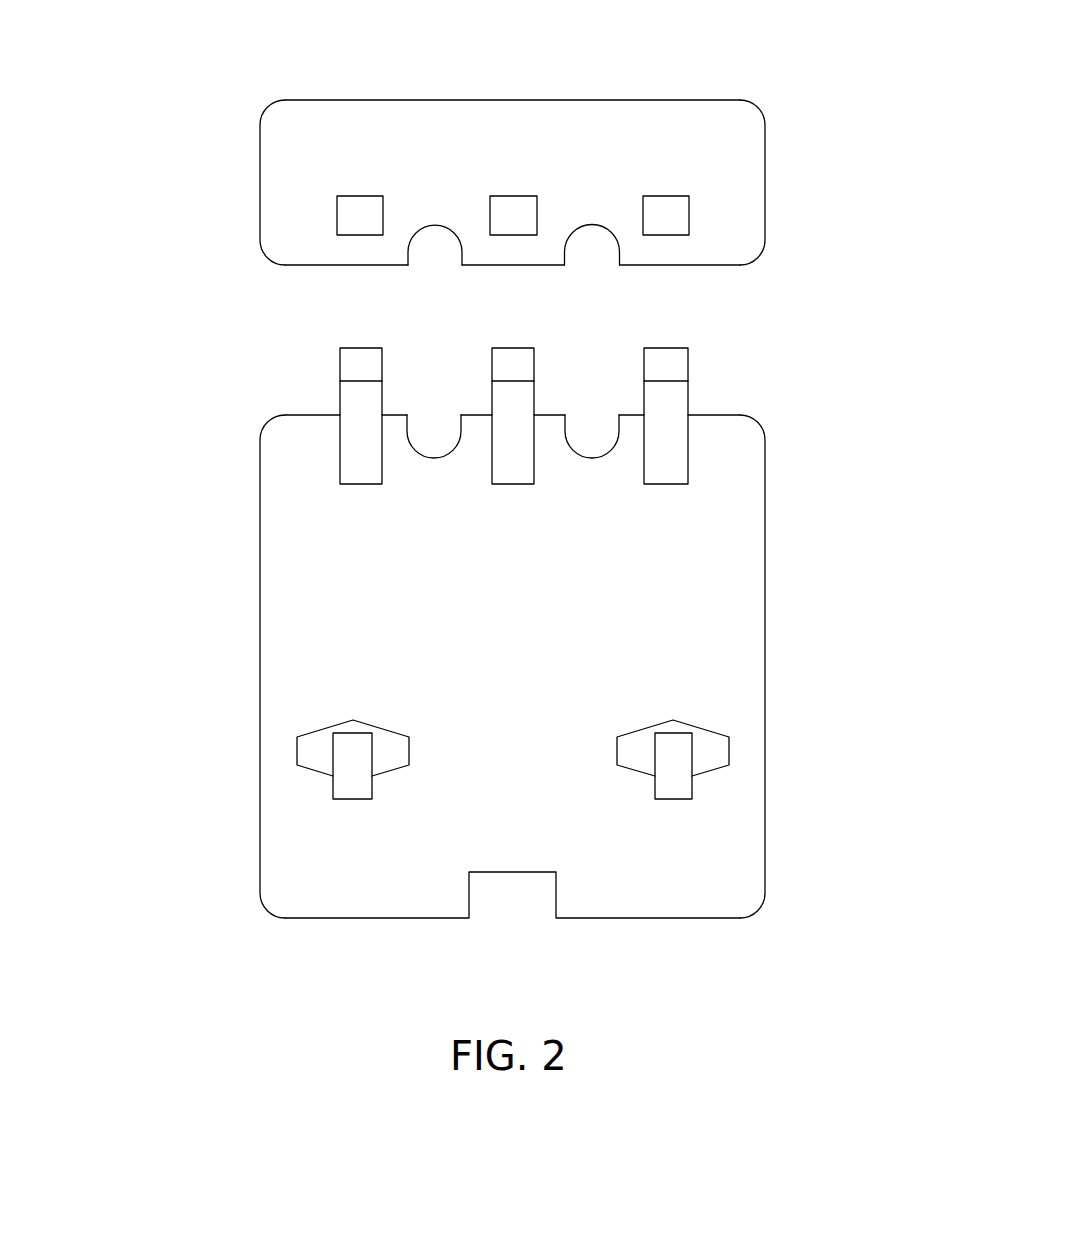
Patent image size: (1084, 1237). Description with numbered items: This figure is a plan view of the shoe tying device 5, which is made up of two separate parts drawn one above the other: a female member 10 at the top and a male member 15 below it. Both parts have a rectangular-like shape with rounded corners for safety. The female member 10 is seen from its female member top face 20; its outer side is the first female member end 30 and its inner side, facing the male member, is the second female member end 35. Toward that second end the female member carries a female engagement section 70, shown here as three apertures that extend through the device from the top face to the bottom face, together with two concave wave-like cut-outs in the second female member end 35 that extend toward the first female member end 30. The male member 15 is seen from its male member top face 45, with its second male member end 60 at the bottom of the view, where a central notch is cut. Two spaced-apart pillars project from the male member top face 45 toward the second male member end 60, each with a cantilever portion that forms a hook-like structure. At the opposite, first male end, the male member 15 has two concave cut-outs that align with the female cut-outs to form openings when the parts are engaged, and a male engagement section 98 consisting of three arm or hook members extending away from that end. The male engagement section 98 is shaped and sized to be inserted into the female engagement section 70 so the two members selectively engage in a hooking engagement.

The shoe tying device 5 is at (208, 46).
The female member 10 is at (575, 98).
The male member 15 is at (257, 640).
The female member top face 20 is at (747, 135).
The first female member end 30 is at (735, 100).
The second female member end 35 is at (752, 270).
The male member top face 45 is at (735, 627).
The second male member end 60 is at (760, 913).
The female engagement section 70 is at (376, 135).
The male engagement section 98 is at (288, 380).